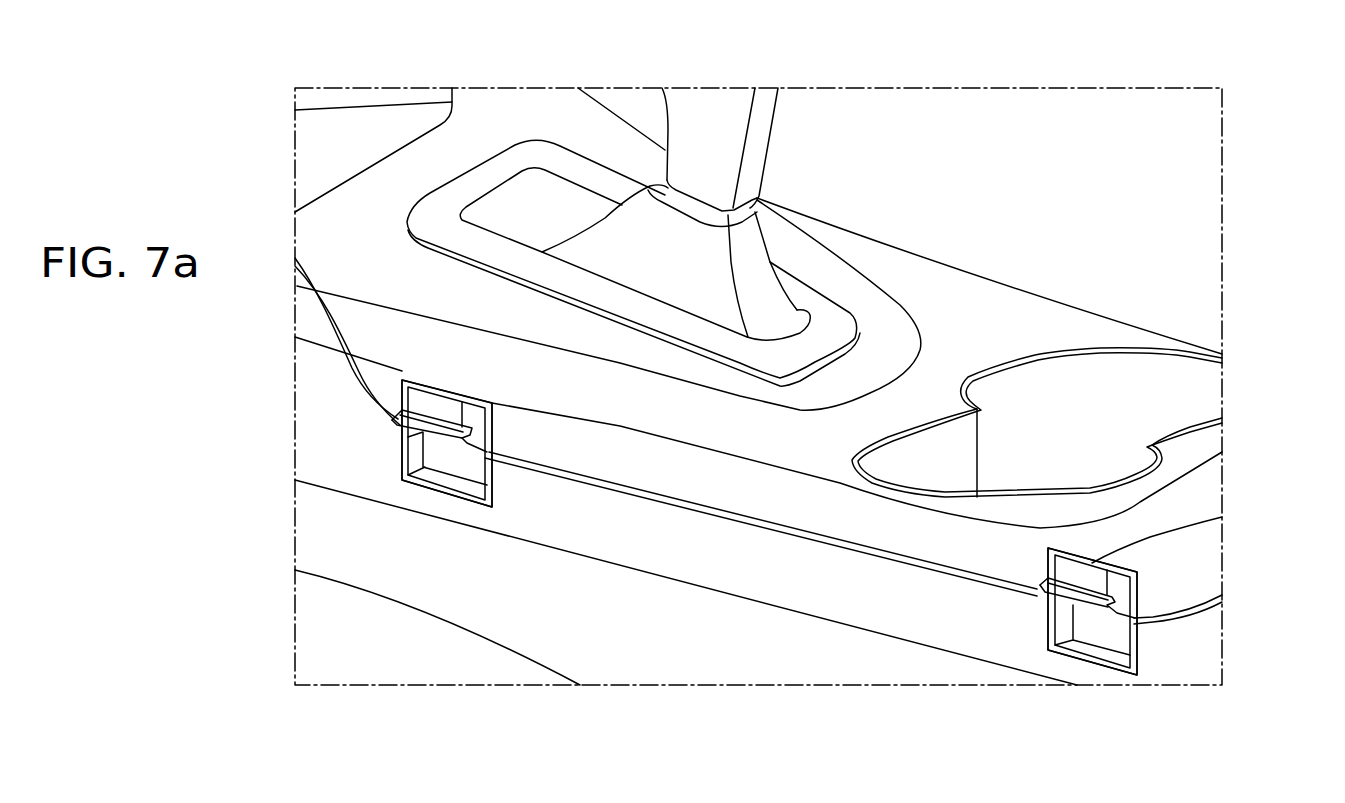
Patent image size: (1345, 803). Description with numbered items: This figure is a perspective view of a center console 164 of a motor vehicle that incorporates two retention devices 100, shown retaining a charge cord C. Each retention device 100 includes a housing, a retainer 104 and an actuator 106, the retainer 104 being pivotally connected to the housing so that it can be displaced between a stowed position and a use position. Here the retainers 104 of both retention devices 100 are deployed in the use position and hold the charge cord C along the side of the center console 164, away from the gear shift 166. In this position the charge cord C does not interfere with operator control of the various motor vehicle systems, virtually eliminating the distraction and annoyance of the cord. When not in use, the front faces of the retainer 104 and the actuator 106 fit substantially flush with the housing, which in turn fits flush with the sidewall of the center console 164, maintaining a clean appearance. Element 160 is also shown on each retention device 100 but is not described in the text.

The retention device 100 is at (390, 532).
The retainer 104 is at (423, 430).
The actuator 106 is at (457, 465).
The clip 160 is at (437, 410).
The center console 164 is at (1003, 327).
The gear shift 166 is at (763, 128).
The charge cord C is at (743, 518).